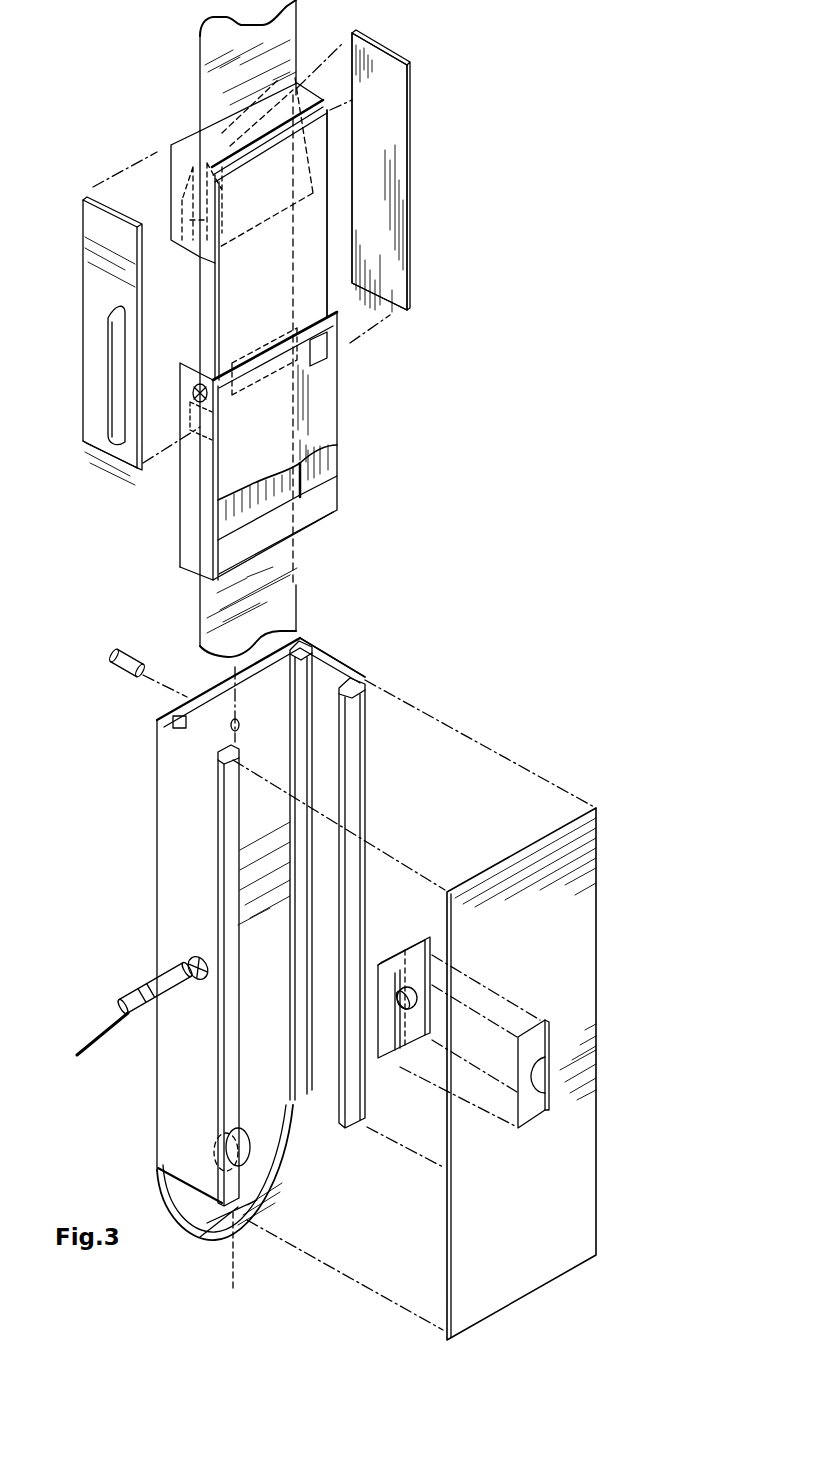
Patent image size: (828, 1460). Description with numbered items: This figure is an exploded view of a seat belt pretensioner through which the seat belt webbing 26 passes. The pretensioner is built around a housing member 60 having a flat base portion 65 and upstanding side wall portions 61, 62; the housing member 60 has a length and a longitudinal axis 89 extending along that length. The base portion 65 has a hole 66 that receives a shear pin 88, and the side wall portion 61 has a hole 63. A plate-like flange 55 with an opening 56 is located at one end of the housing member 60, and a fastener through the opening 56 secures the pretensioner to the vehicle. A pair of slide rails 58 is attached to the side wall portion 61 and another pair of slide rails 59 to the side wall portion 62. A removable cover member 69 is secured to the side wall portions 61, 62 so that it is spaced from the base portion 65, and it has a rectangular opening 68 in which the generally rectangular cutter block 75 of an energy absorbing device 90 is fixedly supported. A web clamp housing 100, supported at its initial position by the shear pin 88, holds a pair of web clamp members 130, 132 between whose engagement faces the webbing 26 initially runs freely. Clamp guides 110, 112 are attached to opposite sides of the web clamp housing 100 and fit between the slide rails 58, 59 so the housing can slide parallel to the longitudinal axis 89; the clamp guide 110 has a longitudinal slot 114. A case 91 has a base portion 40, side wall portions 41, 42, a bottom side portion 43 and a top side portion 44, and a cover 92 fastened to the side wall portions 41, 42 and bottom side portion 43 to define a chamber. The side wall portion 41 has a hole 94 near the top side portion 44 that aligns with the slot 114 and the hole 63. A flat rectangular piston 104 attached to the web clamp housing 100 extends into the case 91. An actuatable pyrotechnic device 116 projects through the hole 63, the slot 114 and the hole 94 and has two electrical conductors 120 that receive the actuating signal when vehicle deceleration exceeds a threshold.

The seat belt webbing 26 is at (230, 55).
The web clamp housing 100 is at (192, 140).
The web clamp member 130 is at (180, 200).
The web clamp member 132 is at (185, 220).
The top side portion 44 is at (207, 360).
The piston 104 is at (307, 250).
The clamp guide 112 is at (383, 120).
The energy absorbing device 90 is at (365, 331).
The cover 92 is at (310, 412).
The side wall portion 41 is at (187, 497).
The case 91 is at (185, 537).
The side wall portion 42 is at (318, 470).
The base portion 40 is at (338, 507).
The bottom side portion 43 is at (270, 530).
The hole 94 is at (200, 407).
The clamp guide 110 is at (100, 282).
The longitudinal slot 114 is at (113, 360).
The housing member 60 is at (145, 867).
The side wall portion 61 is at (177, 763).
The slide rails 58 is at (170, 715).
The hole 66 is at (230, 728).
The shear pin 88 is at (128, 653).
The base portion 65 is at (268, 683).
The side wall portion 62 is at (337, 652).
The slide rails 59 is at (303, 663).
The cover member 69 is at (557, 900).
The cutter block 75 is at (403, 930).
The rectangular opening 68 is at (535, 1090).
The hole 63 is at (200, 957).
The pyrotechnic device 116 is at (147, 1013).
The electrical conductors 120 is at (128, 1016).
The opening 56 is at (220, 1143).
The flange 55 is at (267, 1137).
The longitudinal axis 89 is at (235, 1260).